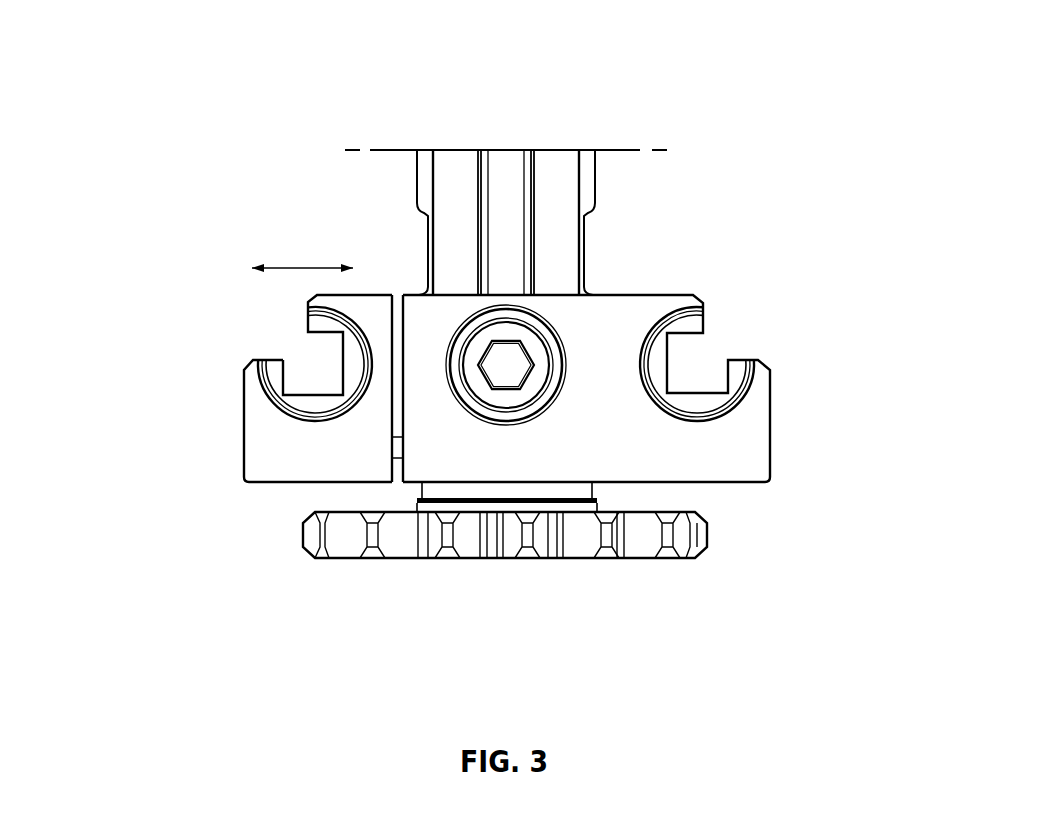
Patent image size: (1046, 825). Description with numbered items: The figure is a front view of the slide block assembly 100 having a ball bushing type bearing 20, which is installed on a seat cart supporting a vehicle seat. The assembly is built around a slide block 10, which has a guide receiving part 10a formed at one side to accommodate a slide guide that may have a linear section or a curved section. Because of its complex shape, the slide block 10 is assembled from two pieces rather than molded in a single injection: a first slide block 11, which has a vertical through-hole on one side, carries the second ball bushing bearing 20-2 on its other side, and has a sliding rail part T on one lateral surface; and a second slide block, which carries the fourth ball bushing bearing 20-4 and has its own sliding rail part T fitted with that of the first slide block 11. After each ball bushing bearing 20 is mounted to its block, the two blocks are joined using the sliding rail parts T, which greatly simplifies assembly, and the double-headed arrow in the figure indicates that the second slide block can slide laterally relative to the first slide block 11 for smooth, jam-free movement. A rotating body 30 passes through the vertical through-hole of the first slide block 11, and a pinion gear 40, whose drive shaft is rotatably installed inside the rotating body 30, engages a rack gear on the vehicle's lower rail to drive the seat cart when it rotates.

The slide block assembly 100 is at (196, 112).
The rotating body 30 is at (556, 170).
The ball bushing bearing 20 is at (133, 252).
The fourth ball bushing bearing 20-4 is at (307, 327).
The second ball bushing bearing 20-2 is at (705, 325).
The slide block 10 is at (277, 450).
The guide receiving part 10a is at (278, 397).
The first slide block 11 is at (448, 455).
The sliding rail part T is at (397, 440).
The pinion gear 40 is at (578, 545).